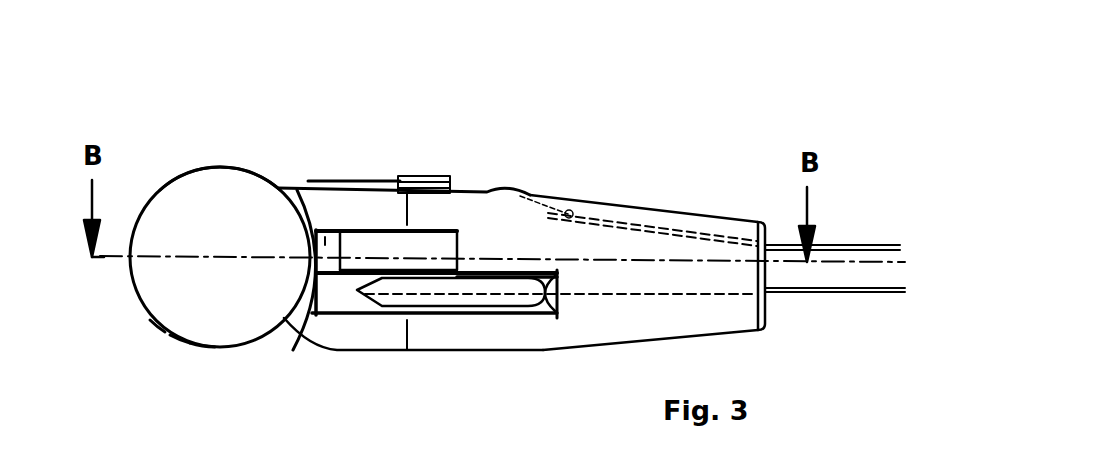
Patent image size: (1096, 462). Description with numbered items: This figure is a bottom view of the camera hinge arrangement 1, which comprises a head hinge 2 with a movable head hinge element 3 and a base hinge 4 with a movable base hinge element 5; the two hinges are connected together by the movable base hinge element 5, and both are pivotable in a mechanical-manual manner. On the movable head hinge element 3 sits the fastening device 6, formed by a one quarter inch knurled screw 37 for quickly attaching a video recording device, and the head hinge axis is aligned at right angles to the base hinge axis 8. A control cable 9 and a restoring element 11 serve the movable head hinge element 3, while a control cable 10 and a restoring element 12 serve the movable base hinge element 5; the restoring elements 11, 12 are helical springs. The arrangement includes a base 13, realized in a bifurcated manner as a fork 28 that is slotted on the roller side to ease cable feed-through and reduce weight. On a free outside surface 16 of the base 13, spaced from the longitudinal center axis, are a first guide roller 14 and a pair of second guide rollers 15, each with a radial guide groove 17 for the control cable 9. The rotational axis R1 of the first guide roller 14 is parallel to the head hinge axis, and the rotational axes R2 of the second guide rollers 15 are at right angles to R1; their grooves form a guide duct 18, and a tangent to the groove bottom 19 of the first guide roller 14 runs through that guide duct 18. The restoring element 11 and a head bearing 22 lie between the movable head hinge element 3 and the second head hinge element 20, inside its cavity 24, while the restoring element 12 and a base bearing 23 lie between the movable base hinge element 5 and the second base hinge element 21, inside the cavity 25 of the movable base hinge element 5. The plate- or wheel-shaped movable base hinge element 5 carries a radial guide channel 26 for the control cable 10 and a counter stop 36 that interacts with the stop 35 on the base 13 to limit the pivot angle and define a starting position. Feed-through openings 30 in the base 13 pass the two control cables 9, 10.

The camera hinge arrangement 1 is at (745, 92).
The head hinge 2 is at (160, 190).
The movable head hinge element 3 is at (298, 193).
The base hinge 4 is at (423, 270).
The movable base hinge element 5 is at (305, 307).
The fastening device 6 is at (238, 166).
The base hinge axis 8 is at (407, 198).
The control cable 9 is at (541, 191).
The control cable 10 is at (553, 320).
The restoring element 11 is at (138, 290).
The restoring element 12 is at (362, 308).
The base 13 is at (708, 217).
The first guide roller 14 is at (527, 189).
The pair of second guide rollers 15 is at (420, 177).
The free outside surface 16 is at (590, 185).
The radial guide groove 17 is at (393, 188).
The guide duct 18 is at (463, 180).
The groove bottom 19 is at (537, 189).
The second head hinge element 20 is at (157, 323).
The second base hinge element 21 is at (397, 353).
The head bearing 22 is at (181, 337).
The base bearing 23 is at (423, 351).
The cavity 24 is at (200, 345).
The cavity 25 is at (770, 292).
The radial guide channel 26 is at (533, 277).
The fork 28 is at (650, 207).
The feed-through openings 30 is at (637, 338).
The stop 35 is at (423, 270).
The counter stop 36 is at (324, 237).
The knurled screw 37 is at (176, 182).
The rotational axis R1 is at (535, 227).
The rotational axes R2 is at (450, 180).